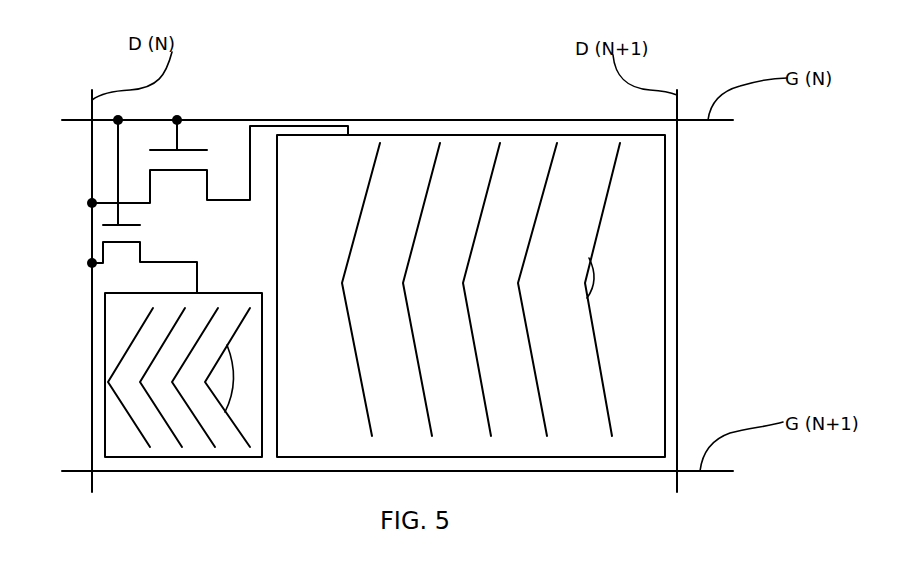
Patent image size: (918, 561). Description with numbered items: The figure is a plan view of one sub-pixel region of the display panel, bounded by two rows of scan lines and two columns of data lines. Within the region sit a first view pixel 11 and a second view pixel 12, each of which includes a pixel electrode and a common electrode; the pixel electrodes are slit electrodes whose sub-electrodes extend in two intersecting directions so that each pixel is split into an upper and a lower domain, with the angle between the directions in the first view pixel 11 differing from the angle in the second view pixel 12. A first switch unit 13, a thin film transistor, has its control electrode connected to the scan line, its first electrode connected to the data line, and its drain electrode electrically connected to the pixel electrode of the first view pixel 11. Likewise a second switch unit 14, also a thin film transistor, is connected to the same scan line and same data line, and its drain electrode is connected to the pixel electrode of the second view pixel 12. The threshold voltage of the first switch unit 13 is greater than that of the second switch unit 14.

The first view pixel 11 is at (638, 285).
The second view pixel 12 is at (247, 418).
The first switch unit 13 is at (175, 157).
The second switch unit 14 is at (113, 253).